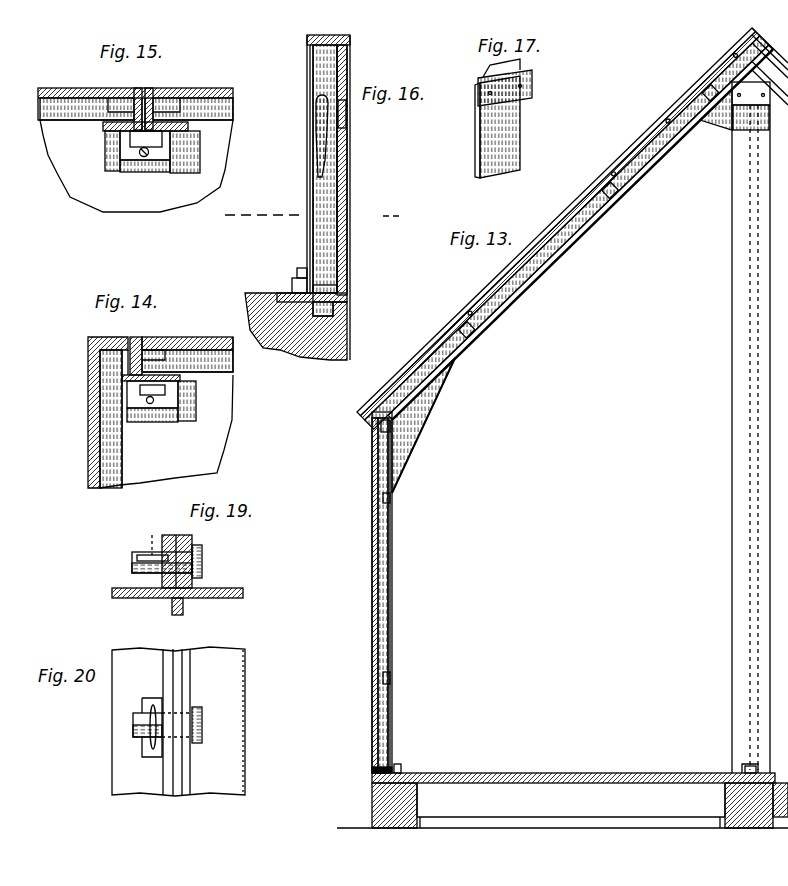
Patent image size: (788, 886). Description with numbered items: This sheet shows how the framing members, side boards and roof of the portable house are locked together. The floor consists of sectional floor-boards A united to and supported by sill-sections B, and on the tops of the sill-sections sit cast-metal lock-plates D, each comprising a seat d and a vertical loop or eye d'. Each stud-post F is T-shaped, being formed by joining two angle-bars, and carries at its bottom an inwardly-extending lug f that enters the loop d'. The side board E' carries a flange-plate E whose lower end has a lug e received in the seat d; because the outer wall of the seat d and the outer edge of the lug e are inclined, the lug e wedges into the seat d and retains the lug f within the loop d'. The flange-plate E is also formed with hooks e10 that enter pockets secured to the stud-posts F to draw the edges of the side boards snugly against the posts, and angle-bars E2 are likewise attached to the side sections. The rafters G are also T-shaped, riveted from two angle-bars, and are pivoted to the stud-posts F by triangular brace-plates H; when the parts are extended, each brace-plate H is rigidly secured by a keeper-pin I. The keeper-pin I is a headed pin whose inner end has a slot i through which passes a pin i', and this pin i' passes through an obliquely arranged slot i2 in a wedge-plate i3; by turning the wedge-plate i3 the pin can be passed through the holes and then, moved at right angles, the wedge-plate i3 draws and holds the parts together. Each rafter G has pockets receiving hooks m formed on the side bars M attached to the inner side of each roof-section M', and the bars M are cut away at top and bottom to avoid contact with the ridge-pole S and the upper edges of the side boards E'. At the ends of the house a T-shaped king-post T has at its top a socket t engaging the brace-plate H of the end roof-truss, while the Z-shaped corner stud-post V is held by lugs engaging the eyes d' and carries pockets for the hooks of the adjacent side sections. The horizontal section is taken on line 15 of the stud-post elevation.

In FIG. 15, the sectional floor-board A is at (170, 205).
In FIG. 14, the sectional floor-board A is at (184, 420).
In FIG. 16, the sectional floor-board A is at (296, 326).
In FIG. 13, the sectional floor-board A is at (525, 773).
In FIG. 13, the sill-section B is at (372, 803).
In FIG. 15, the lock-plate D is at (130, 158).
In FIG. 14, the lock-plate D is at (180, 392).
In FIG. 16, the lock-plate D is at (326, 312).
In FIG. 13, the seat d is at (722, 756).
In FIG. 15, the loop or eye d' is at (173, 140).
In FIG. 16, the loop or eye d' is at (287, 266).
In FIG. 15, the flange-plate E is at (146, 97).
In FIG. 14, the flange-plate E is at (151, 341).
In FIG. 16, the flange-plate E is at (342, 169).
In FIG. 15, the side board E' is at (133, 77).
In FIG. 14, the side board E' is at (187, 329).
In FIG. 16, the side board E' is at (346, 197).
In FIG. 13, the side board E' is at (361, 592).
In FIG. 15, the angle-bar E2 is at (233, 108).
In FIG. 14, the angle-bar E2 is at (233, 367).
In FIG. 16, the angle-bar E2 is at (347, 298).
In FIG. 13, the angle-bar E2 is at (372, 771).
In FIG. 16, the lug e is at (320, 293).
In FIG. 16, the hook e10 is at (340, 112).
In FIG. 15, the stud-post F is at (108, 131).
In FIG. 16, the stud-post F is at (307, 210).
In FIG. 13, the stud-post F is at (392, 636).
In FIG. 15, the lug f is at (150, 158).
In FIG. 16, the lug f is at (292, 286).
In FIG. 13, the lug f is at (400, 766).
In FIG. 19, the rafter G is at (180, 584).
In FIG. 20, the rafter G is at (188, 721).
In FIG. 13, the rafter G is at (545, 266).
In FIG. 19, the brace-plate H is at (194, 612).
In FIG. 20, the brace-plate H is at (180, 647).
In FIG. 13, the brace-plate H is at (425, 410).
In FIG. 19, the keeper-pin I is at (203, 557).
In FIG. 20, the keeper-pin I is at (200, 708).
In FIG. 19, the slot i is at (138, 565).
In FIG. 20, the slot i is at (138, 731).
In FIG. 19, the pin i' is at (147, 534).
In FIG. 20, the pin i' is at (141, 775).
In FIG. 13, the pin i' is at (706, 761).
In FIG. 20, the slot i2 is at (153, 705).
In FIG. 19, the wedge-plate i3 is at (140, 556).
In FIG. 20, the wedge-plate i3 is at (143, 745).
In FIG. 16, the block k is at (314, 122).
In FIG. 13, the block k is at (668, 126).
In FIG. 13, the side bar M is at (567, 232).
In FIG. 13, the roof-section M' is at (560, 226).
In FIG. 13, the hook m is at (665, 121).
In FIG. 13, the ridge-pole S is at (737, 30).
In FIG. 17, the king-post T is at (485, 127).
In FIG. 13, the king-post T is at (736, 439).
In FIG. 17, the socket t is at (533, 86).
In FIG. 13, the socket t is at (771, 95).
In FIG. 14, the corner stud-post V is at (112, 338).
In FIG. 16, the section line 15- 15 is at (316, 217).